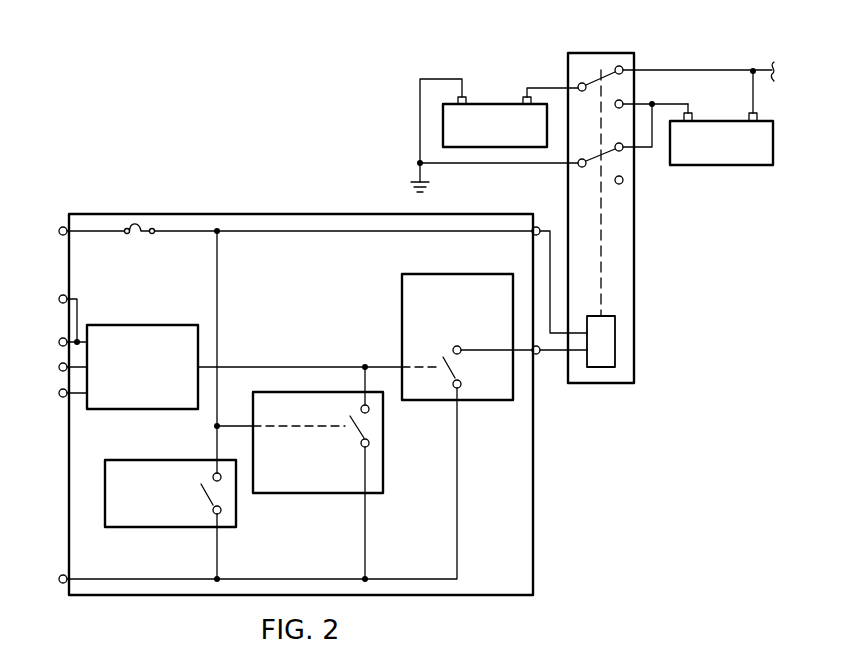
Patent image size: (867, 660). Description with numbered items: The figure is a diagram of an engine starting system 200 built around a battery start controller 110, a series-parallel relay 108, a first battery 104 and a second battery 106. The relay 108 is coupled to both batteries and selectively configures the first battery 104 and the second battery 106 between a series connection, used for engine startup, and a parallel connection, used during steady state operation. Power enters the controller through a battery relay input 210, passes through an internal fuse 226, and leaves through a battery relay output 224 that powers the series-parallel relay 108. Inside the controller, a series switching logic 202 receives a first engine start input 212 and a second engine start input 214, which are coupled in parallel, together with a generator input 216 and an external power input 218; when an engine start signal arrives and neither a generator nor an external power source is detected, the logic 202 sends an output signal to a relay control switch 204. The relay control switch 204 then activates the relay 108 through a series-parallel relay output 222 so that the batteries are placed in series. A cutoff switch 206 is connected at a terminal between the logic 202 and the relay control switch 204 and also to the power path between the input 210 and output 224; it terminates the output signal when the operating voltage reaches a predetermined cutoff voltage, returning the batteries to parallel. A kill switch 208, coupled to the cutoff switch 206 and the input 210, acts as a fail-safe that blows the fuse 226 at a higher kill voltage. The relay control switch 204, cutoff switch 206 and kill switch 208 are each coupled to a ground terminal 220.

The engine starting system 200 is at (241, 115).
The battery start controller 110 is at (237, 211).
The battery relay input 210 is at (59, 229).
The first engine start input 212 is at (59, 297).
The second engine start input 214 is at (59, 340).
The generator input 216 is at (59, 366).
The external power input 218 is at (59, 394).
The ground terminal 220 is at (59, 581).
The fuse 226 is at (141, 231).
The series switching logic 202 is at (143, 409).
The kill switch 208 is at (172, 527).
The cutoff switch 206 is at (320, 493).
The relay control switch 204 is at (402, 340).
The series-parallel relay output 222 is at (538, 356).
The battery relay output 224 is at (536, 226).
The series-parallel relay 108 is at (608, 53).
The first battery 104 is at (494, 104).
The second battery 106 is at (720, 165).